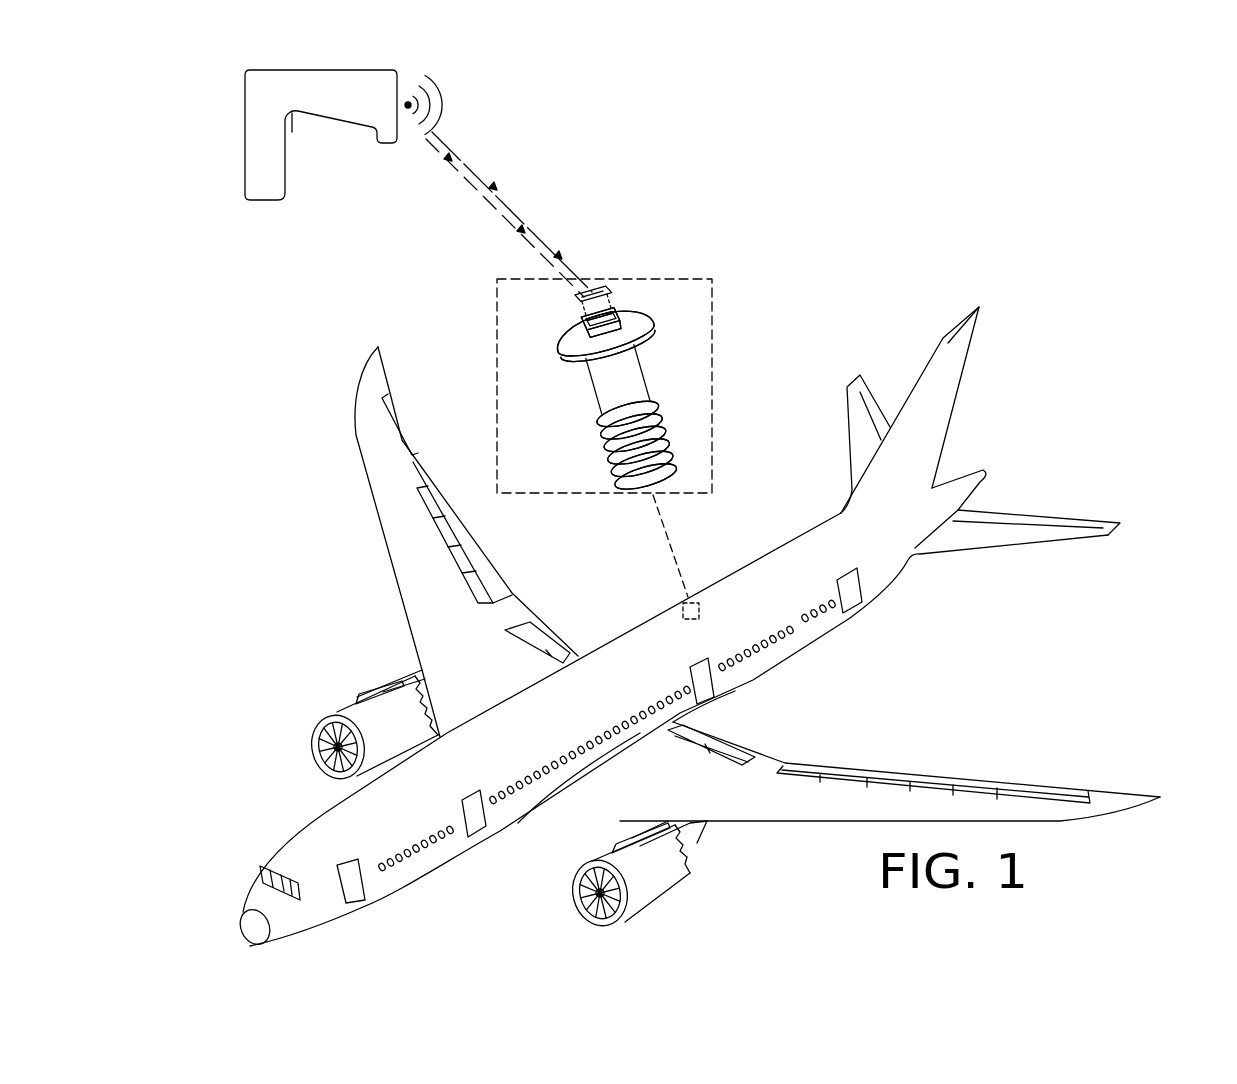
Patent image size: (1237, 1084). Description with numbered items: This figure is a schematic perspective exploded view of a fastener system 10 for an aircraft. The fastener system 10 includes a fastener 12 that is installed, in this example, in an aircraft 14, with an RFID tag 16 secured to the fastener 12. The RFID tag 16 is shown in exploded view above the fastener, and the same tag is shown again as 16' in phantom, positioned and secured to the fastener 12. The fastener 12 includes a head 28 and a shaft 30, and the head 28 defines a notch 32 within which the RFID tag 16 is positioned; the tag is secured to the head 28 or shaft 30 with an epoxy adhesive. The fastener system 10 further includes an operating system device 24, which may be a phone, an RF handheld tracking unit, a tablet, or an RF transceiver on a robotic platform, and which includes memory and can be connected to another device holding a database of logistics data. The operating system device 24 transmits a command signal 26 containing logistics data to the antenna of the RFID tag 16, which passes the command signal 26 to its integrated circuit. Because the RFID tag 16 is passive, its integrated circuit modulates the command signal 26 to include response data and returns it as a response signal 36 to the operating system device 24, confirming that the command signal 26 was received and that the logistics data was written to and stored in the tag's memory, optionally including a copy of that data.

The fastener system 10 is at (730, 180).
The fastener 12 is at (625, 377).
The aircraft 14 is at (717, 600).
The RFID tag 16 is at (617, 277).
The RFID tag (in phantom) 16' is at (667, 310).
The operating system device 24 is at (373, 87).
The command signal 26 is at (472, 181).
The head 28 is at (561, 336).
The shaft 30 is at (670, 427).
The notch 32 is at (620, 310).
The response signal 36 is at (475, 168).